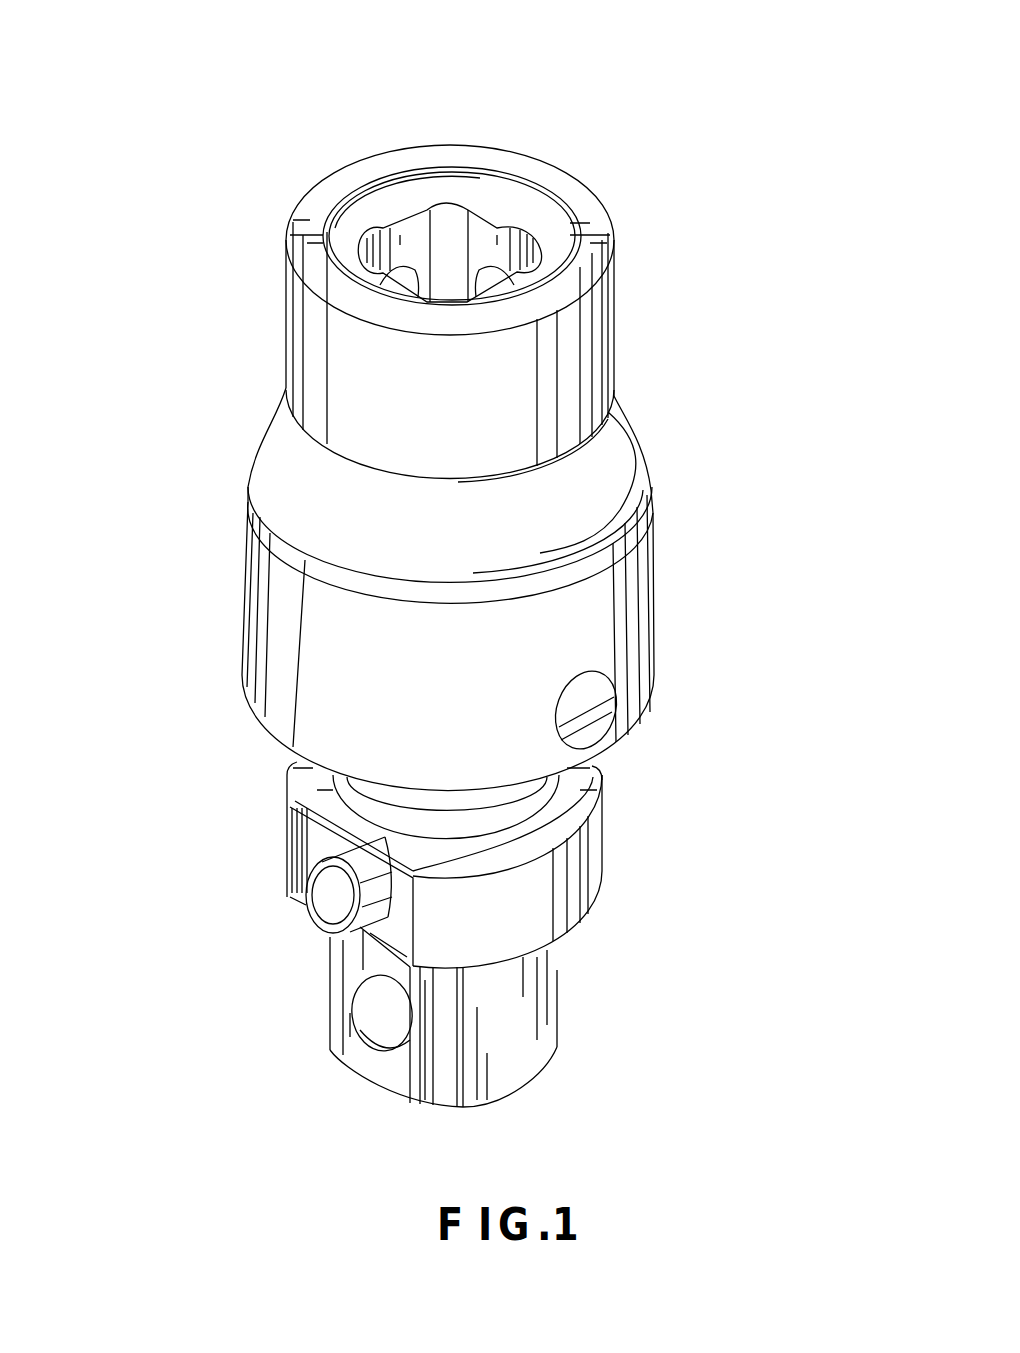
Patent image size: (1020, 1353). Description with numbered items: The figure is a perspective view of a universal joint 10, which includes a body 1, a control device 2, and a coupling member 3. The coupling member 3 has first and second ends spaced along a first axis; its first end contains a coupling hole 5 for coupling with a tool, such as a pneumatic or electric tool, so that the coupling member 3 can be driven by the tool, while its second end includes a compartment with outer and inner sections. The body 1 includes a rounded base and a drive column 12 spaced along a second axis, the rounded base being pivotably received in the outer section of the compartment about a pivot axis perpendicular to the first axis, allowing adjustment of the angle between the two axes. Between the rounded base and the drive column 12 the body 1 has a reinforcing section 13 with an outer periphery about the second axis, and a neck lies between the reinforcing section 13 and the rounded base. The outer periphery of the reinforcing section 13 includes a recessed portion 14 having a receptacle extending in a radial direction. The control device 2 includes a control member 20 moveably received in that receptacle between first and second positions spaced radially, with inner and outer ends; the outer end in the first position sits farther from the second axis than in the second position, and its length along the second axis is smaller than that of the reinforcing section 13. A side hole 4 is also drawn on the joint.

The body 1 is at (350, 1220).
The control device 2 is at (242, 1035).
The coupling member 3 is at (577, 315).
The side hole / section 4- 4 is at (593, 722).
The coupling hole 5 is at (453, 218).
The universal joint 10 is at (722, 556).
The drive column 12 is at (467, 1087).
The reinforcing section 13 is at (565, 870).
The recessed portion 14 is at (290, 897).
The control member 20 is at (336, 893).